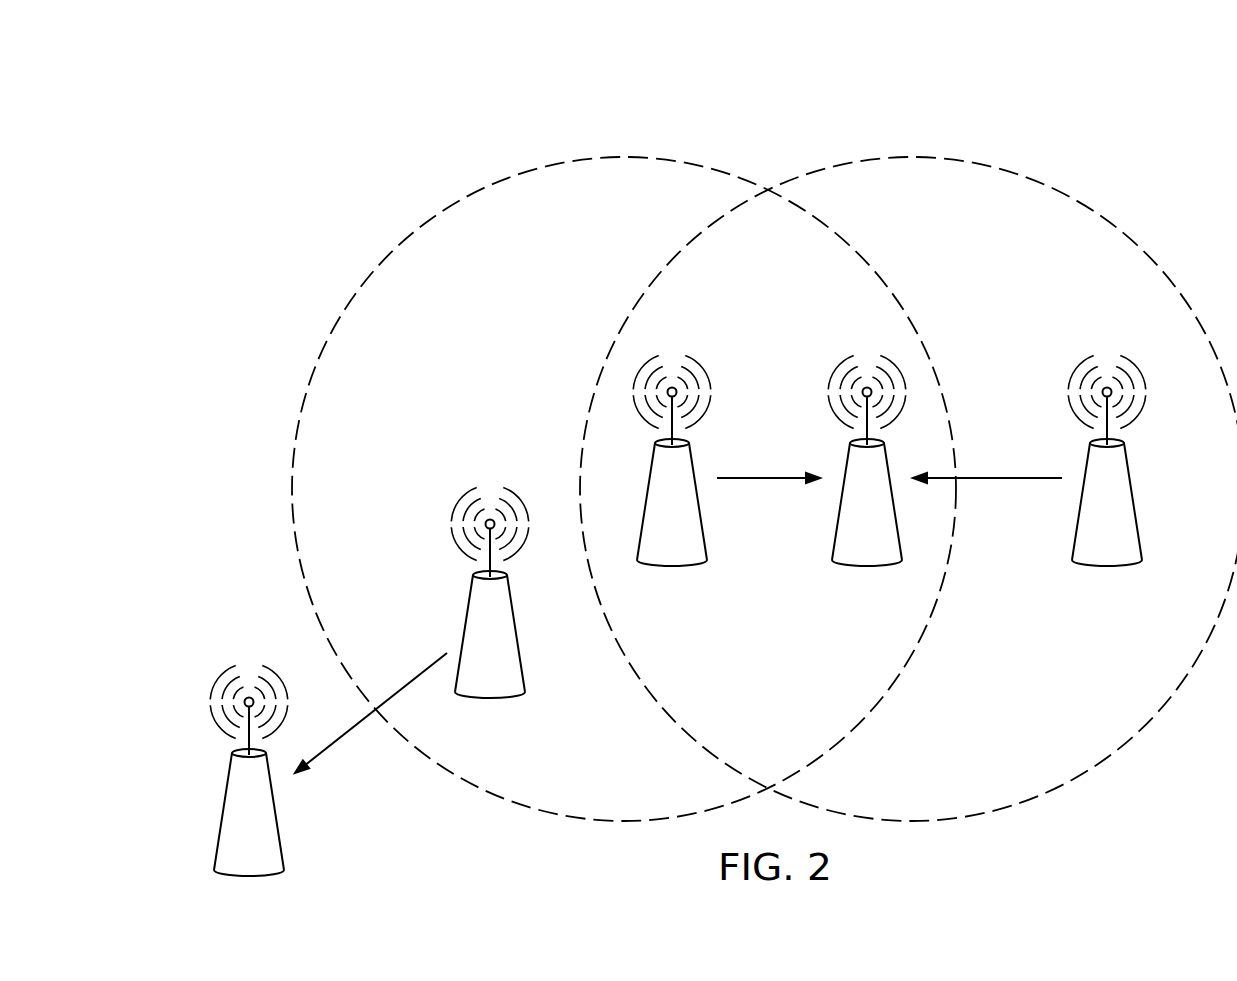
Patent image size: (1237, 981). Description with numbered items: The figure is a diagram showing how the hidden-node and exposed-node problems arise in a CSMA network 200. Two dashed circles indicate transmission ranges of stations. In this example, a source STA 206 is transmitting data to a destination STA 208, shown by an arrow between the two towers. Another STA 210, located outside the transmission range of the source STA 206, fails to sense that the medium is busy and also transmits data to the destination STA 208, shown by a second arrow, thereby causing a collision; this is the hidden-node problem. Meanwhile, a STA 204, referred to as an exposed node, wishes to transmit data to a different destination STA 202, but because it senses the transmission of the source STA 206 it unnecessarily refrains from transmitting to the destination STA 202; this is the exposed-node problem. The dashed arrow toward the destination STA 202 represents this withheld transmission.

The CSMA network 200 is at (470, 105).
The destination STA 202 is at (222, 810).
The STA 204 is at (462, 632).
The source STA 206 is at (660, 568).
The destination STA 208 is at (878, 571).
The STA 210 is at (1117, 567).